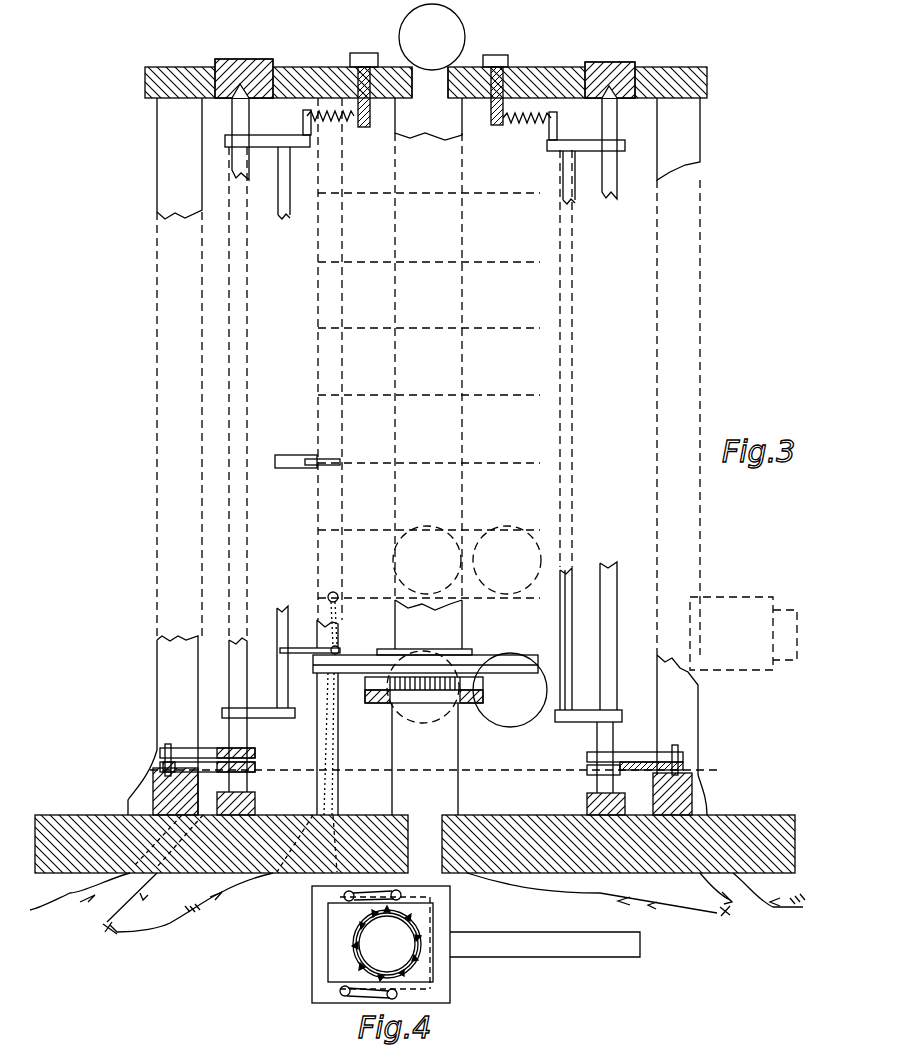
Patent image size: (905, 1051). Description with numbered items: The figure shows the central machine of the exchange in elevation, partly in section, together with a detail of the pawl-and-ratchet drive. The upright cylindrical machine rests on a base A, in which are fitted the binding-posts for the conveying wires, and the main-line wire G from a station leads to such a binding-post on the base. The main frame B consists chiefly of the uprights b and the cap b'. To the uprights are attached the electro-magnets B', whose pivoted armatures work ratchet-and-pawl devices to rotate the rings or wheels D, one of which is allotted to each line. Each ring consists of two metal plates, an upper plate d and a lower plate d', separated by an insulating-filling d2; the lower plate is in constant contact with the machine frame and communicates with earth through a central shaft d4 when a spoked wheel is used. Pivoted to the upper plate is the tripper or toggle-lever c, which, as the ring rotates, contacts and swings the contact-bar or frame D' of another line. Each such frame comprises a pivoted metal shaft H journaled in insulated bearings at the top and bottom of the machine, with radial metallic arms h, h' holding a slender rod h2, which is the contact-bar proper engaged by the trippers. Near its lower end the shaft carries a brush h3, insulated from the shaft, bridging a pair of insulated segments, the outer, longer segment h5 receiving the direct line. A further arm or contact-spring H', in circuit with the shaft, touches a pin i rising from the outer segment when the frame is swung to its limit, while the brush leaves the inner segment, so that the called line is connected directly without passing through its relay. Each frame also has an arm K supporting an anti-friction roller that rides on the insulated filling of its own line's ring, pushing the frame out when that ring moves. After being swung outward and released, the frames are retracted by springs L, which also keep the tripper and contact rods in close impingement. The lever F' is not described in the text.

In FIG. 3, the base A is at (415, 844).
In FIG. 3, the cap b' is at (426, 101).
In FIG. 3, the springs L is at (430, 97).
In FIG. 3, the radial metallic arm h' is at (425, 166).
In FIG. 3, the uprights b is at (417, 456).
In FIG. 3, the rings or wheels D is at (435, 376).
In FIG. 3, the arm K is at (307, 450).
In FIG. 3, the lever with pivots F' is at (425, 694).
In FIG. 3, the tripper or toggle-lever c is at (310, 717).
In FIG. 3, the upper plate of the ring d is at (536, 647).
In FIG. 3, the insulating-filling d2 is at (538, 665).
In FIG. 3, the lower plate of the ring d' is at (468, 688).
In FIG. 3, the central shaft d4 is at (425, 759).
In FIG. 4, the central shaft d4 is at (476, 944).
In FIG. 3, the electro-magnets B' is at (592, 662).
In FIG. 3, the main frame B is at (709, 721).
In FIG. 3, the contact-bar or frame D' is at (433, 636).
In FIG. 3, the pivoted metal bar or shaft H is at (419, 470).
In FIG. 3, the slender rod h2 is at (438, 639).
In FIG. 3, the radial metallic arm h is at (422, 727).
In FIG. 3, the metallic arm or contact-spring H' is at (421, 752).
In FIG. 3, the pin i is at (425, 750).
In FIG. 3, the outer insulated segment h5 is at (716, 768).
In FIG. 3, the metal arm or brush h3 is at (423, 792).
In FIG. 3, the main-line wire G is at (417, 903).